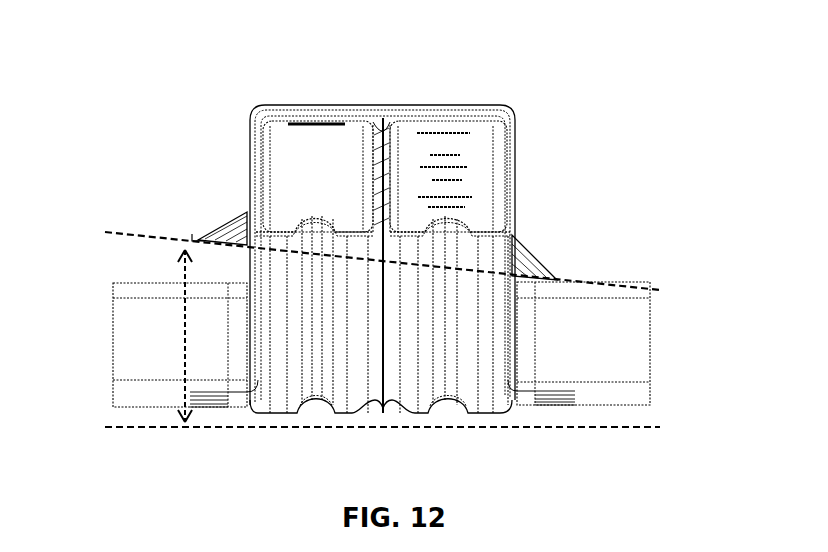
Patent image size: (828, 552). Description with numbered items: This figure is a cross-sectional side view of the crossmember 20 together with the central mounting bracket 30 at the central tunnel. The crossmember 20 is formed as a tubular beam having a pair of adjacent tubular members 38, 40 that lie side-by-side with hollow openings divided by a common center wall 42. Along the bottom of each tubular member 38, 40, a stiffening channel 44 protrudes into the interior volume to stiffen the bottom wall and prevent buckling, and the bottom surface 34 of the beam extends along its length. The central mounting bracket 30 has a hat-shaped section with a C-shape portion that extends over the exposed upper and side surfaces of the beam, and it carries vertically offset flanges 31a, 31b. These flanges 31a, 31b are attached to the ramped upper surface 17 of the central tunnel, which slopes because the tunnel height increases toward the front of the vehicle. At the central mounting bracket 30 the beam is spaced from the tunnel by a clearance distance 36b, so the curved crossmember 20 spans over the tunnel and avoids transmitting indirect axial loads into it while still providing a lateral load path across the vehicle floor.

The central mounting bracket 30 is at (505, 110).
The tubular member 38 is at (287, 145).
The tubular member 40 is at (487, 167).
The common center wall 42 is at (385, 312).
The crossmember 20 is at (492, 255).
The stiffening channel 44 is at (327, 393).
The bottom surface 34 is at (487, 358).
The ramped upper surface 17 is at (125, 230).
The flange 31a is at (200, 237).
The flange 31b is at (545, 272).
The clearance distance 36b is at (185, 322).